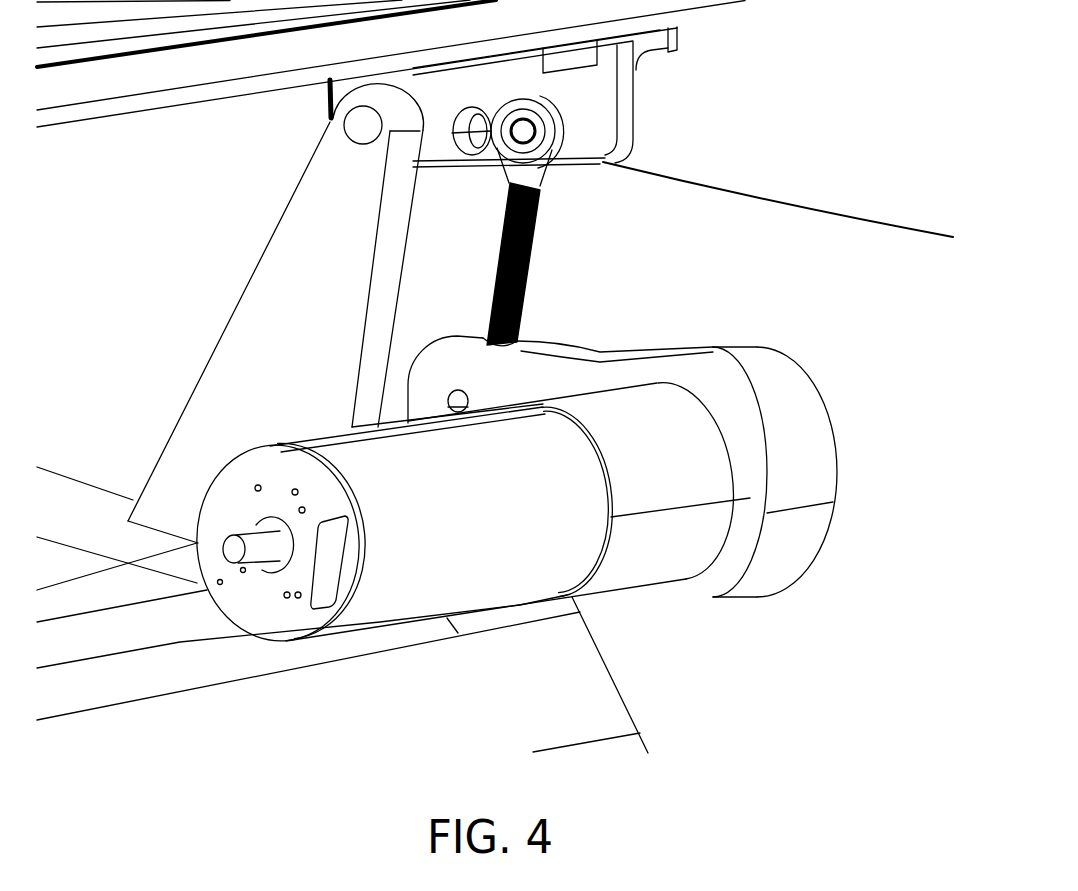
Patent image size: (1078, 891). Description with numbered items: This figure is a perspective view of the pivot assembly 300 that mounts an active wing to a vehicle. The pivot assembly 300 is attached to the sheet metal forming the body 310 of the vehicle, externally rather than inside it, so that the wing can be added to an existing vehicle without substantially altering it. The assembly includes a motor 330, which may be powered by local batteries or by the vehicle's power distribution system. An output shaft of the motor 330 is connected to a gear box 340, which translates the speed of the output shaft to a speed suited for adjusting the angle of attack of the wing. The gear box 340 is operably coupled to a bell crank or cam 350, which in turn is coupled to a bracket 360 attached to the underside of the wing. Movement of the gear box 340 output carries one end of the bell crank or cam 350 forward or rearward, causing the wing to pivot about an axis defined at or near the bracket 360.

The pivot assembly 300 is at (780, 666).
The body 310 is at (391, 424).
The motor 330 is at (437, 569).
The gear box 340 is at (739, 514).
The bell crank or cam 350 is at (563, 354).
The bracket 360 is at (641, 132).